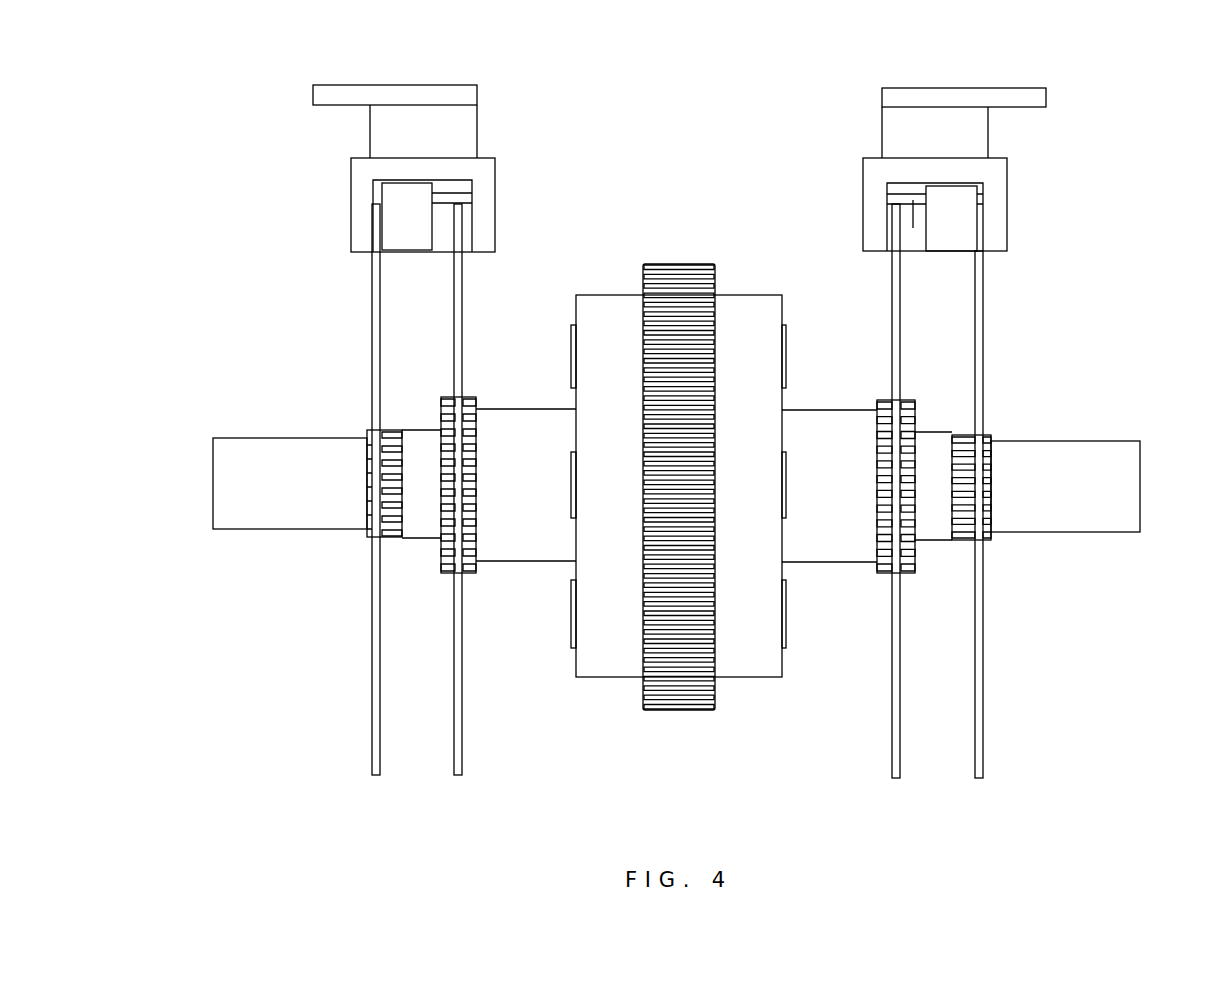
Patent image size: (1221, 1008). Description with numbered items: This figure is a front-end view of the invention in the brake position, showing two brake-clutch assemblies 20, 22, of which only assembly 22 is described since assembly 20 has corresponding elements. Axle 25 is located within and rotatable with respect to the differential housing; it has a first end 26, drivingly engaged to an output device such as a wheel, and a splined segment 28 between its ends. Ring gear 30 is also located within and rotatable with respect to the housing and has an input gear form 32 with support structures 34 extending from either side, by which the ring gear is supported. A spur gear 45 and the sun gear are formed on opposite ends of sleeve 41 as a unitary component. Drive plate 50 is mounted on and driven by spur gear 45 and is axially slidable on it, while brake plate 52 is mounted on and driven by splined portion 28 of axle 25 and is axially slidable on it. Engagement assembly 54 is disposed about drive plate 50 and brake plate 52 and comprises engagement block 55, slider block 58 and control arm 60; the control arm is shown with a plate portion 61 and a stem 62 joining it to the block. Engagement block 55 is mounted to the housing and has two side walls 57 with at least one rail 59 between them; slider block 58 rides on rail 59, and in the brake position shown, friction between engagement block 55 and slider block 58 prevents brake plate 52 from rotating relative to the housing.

The brake-clutch assembly 20 is at (312, 751).
The brake-clutch assembly 22 is at (932, 429).
The axle 25 is at (1078, 474).
The first end 26 is at (1120, 441).
The splined segment 28 is at (985, 542).
The ring gear 30 is at (687, 505).
The input gear form 32 is at (676, 710).
The support structures 34 is at (731, 640).
The sleeve 41 is at (819, 495).
The spur gear 45 is at (907, 573).
The drive plate 50 is at (895, 780).
The brake plate 52 is at (976, 780).
The engagement assembly 54 is at (923, 429).
The engagement block 55 is at (936, 206).
The side walls 57 is at (863, 207).
The slider block 58 is at (938, 229).
The rail 59 is at (913, 228).
The control arm 60 is at (968, 89).
The plate end 61 is at (1047, 97).
The stem 62 is at (922, 142).